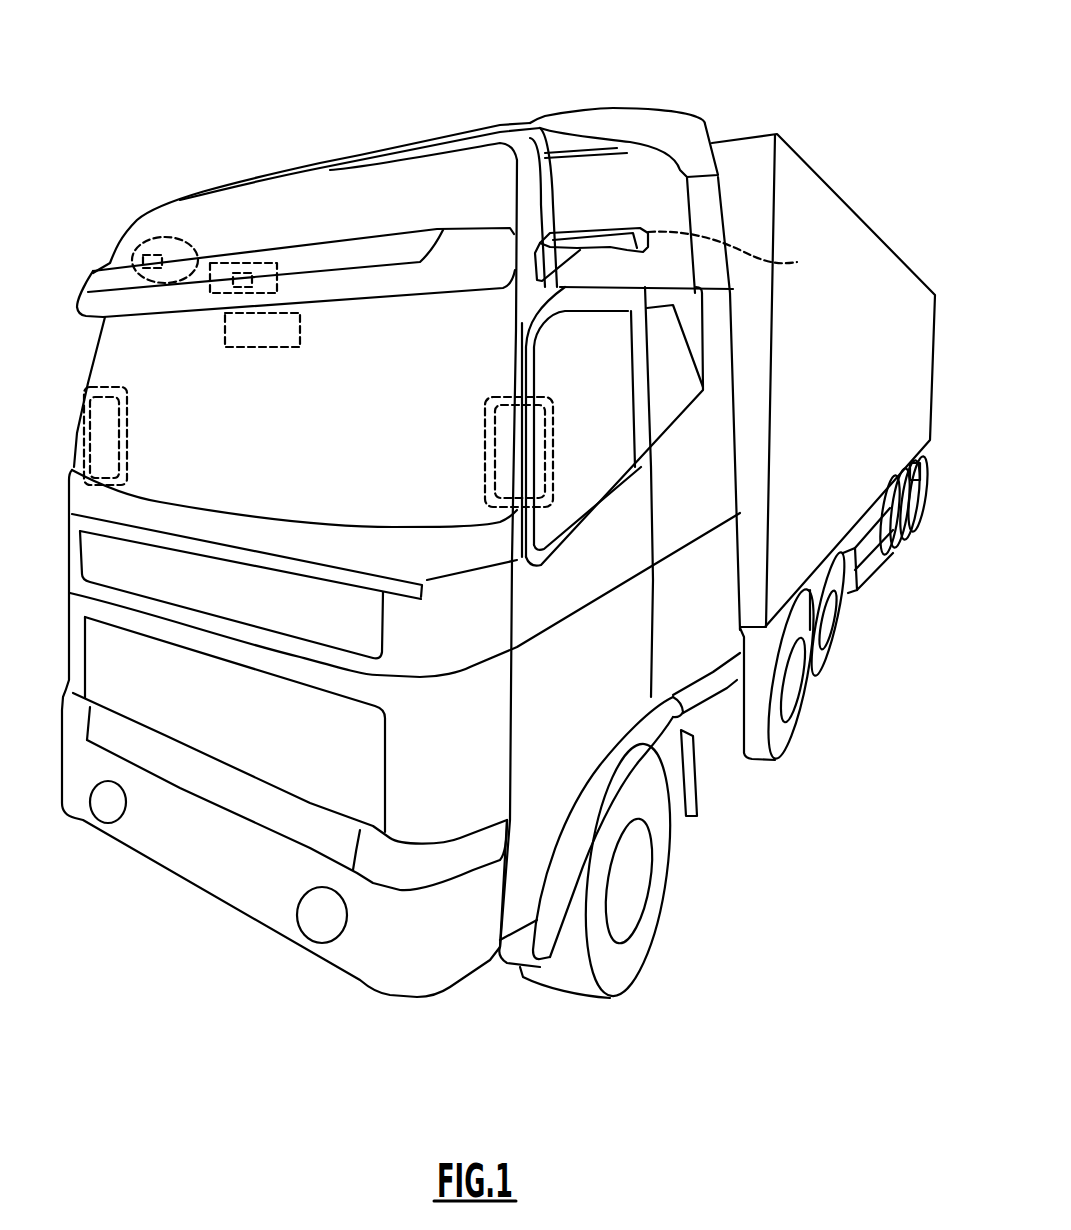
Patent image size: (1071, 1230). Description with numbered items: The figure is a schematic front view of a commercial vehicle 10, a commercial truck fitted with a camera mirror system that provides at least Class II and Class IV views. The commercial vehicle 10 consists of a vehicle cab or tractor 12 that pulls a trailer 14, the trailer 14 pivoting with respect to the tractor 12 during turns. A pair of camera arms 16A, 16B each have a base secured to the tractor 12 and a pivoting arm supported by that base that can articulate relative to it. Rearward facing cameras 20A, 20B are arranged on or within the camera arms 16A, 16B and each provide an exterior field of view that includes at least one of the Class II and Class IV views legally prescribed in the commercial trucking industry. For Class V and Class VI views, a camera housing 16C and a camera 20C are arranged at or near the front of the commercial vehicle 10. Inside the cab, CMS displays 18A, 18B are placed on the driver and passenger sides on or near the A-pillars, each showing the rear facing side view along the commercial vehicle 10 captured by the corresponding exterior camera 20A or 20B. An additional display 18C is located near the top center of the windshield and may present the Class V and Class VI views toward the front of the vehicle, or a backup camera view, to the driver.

The commercial vehicle 10 is at (854, 72).
The tractor 12 is at (67, 550).
The trailer 14 is at (892, 298).
The camera arm 16A is at (587, 237).
The camera arm 16B is at (145, 240).
The camera housing 16C is at (236, 272).
The CMS display 18A is at (495, 440).
The CMS display 18B is at (108, 420).
The display 18C is at (300, 328).
The rearward facing camera 20A is at (745, 255).
The rearward facing camera 20B is at (147, 253).
The camera 20C is at (240, 283).